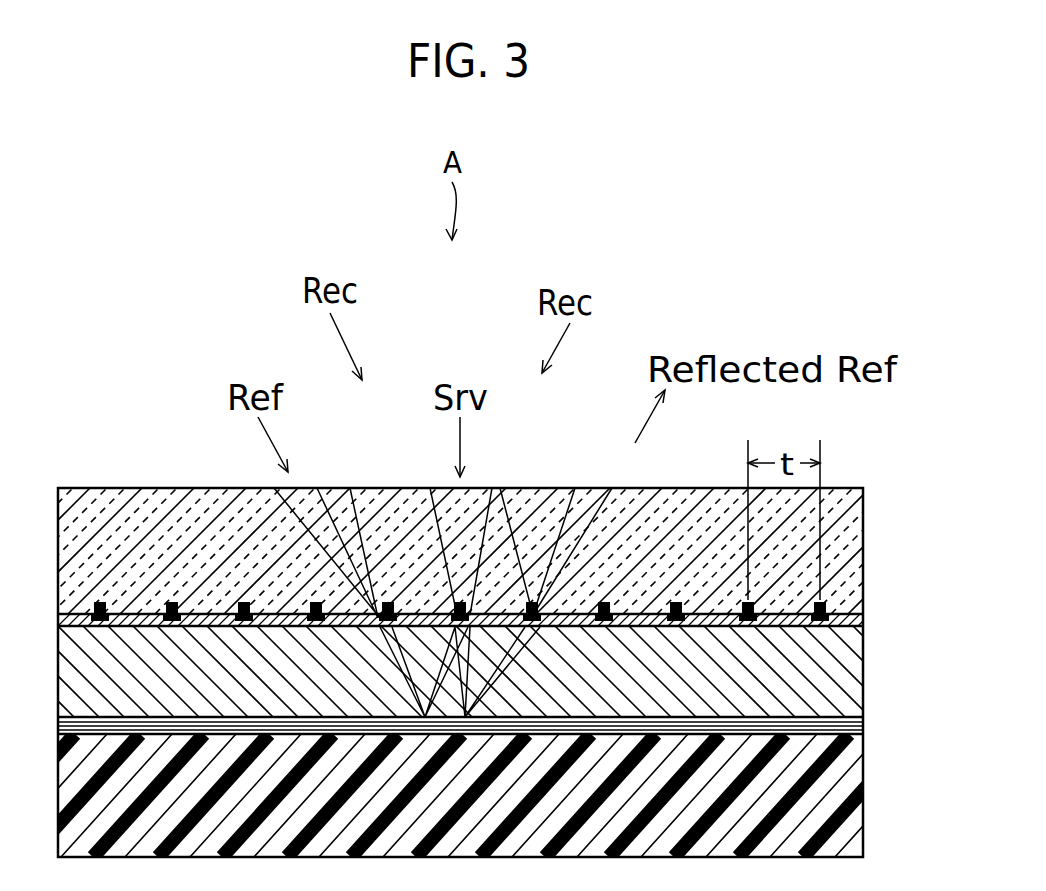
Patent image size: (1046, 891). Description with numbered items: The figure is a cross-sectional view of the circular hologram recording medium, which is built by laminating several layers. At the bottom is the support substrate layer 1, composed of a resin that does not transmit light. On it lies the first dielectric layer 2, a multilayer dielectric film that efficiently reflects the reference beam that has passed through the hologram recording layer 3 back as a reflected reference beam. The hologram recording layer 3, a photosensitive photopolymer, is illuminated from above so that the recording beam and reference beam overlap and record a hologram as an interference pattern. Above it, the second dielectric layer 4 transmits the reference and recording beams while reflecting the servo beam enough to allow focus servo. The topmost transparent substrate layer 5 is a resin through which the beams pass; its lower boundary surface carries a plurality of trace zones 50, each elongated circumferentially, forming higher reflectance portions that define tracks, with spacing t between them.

The support substrate layer 1 is at (863, 792).
The first dielectric layer 2 is at (855, 731).
The hologram recording layer 3 is at (838, 672).
The second dielectric layer 4 is at (827, 617).
The transparent substrate layer 5 is at (835, 542).
The trace zones 50 is at (244, 603).